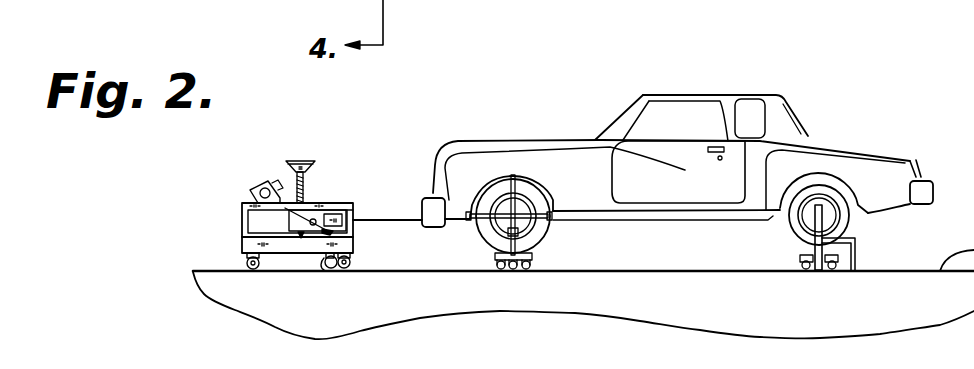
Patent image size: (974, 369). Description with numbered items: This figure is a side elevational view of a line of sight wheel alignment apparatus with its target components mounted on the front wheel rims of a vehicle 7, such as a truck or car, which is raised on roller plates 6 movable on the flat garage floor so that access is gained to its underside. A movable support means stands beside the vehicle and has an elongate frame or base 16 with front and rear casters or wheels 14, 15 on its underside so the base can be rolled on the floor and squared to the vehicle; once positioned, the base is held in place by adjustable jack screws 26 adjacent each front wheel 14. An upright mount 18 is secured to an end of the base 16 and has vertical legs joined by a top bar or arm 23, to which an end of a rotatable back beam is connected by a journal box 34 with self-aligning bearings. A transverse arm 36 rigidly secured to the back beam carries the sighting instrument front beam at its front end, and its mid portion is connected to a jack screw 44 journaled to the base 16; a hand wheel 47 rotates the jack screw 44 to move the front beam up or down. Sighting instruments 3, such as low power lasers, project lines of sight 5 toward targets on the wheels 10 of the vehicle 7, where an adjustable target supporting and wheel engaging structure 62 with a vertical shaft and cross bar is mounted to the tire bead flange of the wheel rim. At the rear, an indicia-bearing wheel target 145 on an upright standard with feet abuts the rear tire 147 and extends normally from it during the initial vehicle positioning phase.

The sighting instruments 3 is at (333, 217).
The lines of sight 5 is at (399, 222).
The roller plates 6 is at (535, 258).
The vehicle 7 is at (811, 135).
The wheels 10 is at (535, 197).
The front casters or wheels 14 is at (341, 272).
The rear casters or wheels 15 is at (260, 273).
The frame or base 16 is at (247, 245).
The upright mount 18 is at (243, 213).
The top bar or arm 23 is at (352, 205).
The adjustable jack screws 26 is at (323, 270).
The journal box 34 is at (252, 197).
The transverse arm 36 is at (290, 203).
The jack screw 44 is at (312, 173).
The hand wheel 47 is at (291, 162).
The target supporting and wheel engaging structure 62 is at (547, 227).
The left wheel target 145 is at (855, 238).
The left tire 147 is at (832, 192).